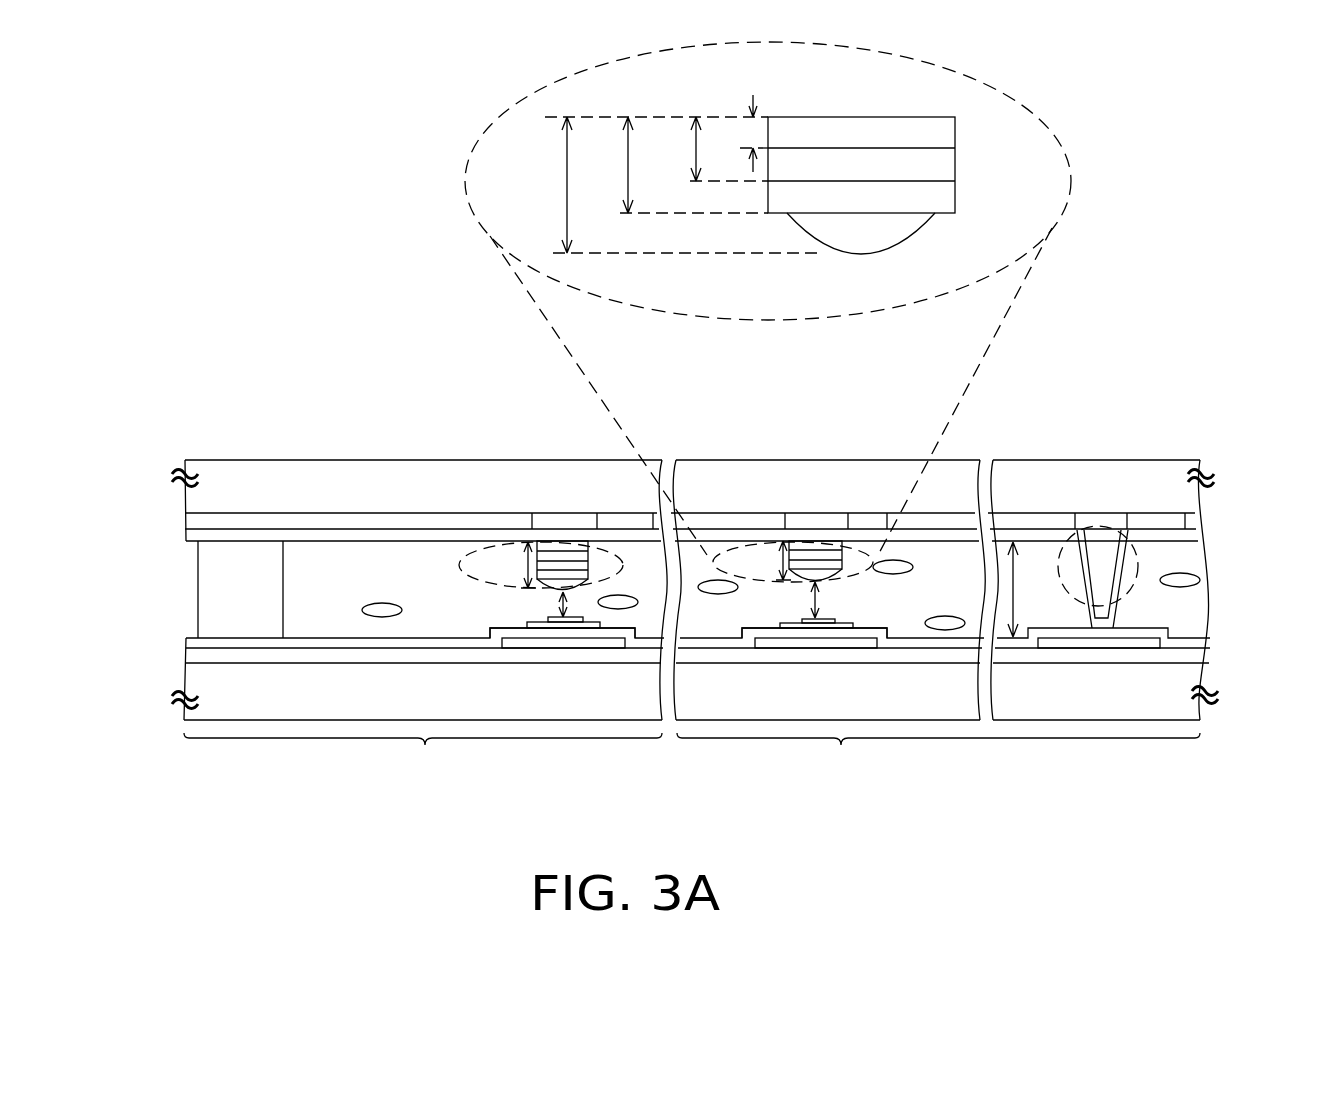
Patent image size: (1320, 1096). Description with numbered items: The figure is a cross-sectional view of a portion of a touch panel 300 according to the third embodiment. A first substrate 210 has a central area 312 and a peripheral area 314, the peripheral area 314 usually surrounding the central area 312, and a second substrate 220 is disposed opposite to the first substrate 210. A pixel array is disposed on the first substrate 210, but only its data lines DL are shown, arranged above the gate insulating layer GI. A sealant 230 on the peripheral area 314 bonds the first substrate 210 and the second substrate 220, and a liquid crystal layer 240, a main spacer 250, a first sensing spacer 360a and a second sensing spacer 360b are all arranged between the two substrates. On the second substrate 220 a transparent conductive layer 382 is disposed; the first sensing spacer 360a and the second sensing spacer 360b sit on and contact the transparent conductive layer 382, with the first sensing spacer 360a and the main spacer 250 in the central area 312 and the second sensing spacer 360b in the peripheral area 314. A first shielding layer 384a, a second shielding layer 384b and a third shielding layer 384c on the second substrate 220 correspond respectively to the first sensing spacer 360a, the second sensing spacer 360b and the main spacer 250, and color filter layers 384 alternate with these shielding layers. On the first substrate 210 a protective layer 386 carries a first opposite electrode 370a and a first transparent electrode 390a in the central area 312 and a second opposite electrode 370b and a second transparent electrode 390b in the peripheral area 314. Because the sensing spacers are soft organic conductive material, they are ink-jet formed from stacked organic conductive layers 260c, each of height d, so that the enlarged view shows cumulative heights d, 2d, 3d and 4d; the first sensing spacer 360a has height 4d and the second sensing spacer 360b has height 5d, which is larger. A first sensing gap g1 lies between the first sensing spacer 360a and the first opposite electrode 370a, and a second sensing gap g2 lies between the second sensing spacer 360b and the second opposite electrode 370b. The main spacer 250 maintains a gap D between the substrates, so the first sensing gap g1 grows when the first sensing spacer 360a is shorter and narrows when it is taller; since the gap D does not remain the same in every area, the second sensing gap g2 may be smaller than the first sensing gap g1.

The touch panel 300 is at (1256, 784).
The central area 312 is at (938, 758).
The peripheral area 314 is at (423, 758).
The first substrate 210 is at (200, 687).
The second substrate 220 is at (200, 506).
The sealant 230 is at (207, 600).
The liquid crystal layer 240 is at (350, 600).
The main spacer 250 is at (1052, 535).
The organic conductive layers 260c is at (898, 228).
The first sensing spacer 360a is at (769, 308).
The second sensing spacer 360b is at (482, 552).
The first opposite electrode 370a is at (783, 623).
The second opposite electrode 370b is at (537, 625).
The transparent conductive layer 382 is at (200, 538).
The color filter layers 384 is at (632, 523).
The first shielding layer 384a is at (817, 523).
The second shielding layer 384b is at (553, 523).
The third shielding layer 384c is at (1118, 523).
The protective layer 386 is at (200, 647).
The first transparent electrode 390a is at (852, 627).
The second transparent electrode 390b is at (605, 629).
The data lines DL is at (565, 645).
The gate insulating layer GI is at (1202, 657).
The gap D is at (1020, 589).
The height of one organic conductive layer d is at (749, 133).
The height of two organic conductive layers 2d is at (713, 149).
The height of three organic conductive layers 3d is at (680, 165).
The height of the first sensing spacer 4d is at (677, 348).
The height of the second sensing spacer 5d is at (512, 565).
The first sensing gap g1 is at (803, 602).
The second sensing gap g2 is at (548, 607).